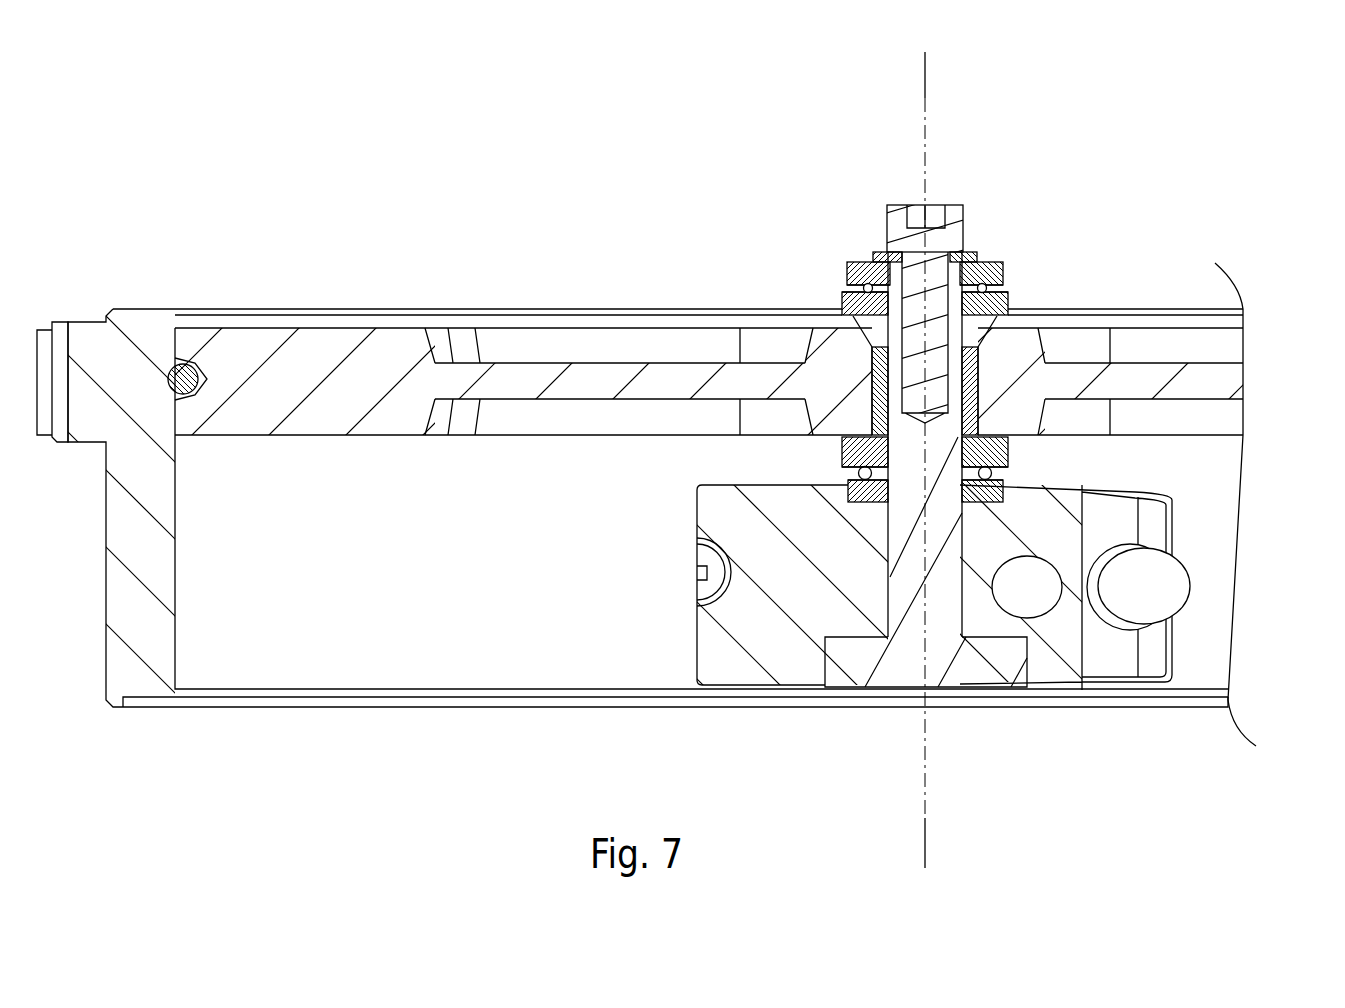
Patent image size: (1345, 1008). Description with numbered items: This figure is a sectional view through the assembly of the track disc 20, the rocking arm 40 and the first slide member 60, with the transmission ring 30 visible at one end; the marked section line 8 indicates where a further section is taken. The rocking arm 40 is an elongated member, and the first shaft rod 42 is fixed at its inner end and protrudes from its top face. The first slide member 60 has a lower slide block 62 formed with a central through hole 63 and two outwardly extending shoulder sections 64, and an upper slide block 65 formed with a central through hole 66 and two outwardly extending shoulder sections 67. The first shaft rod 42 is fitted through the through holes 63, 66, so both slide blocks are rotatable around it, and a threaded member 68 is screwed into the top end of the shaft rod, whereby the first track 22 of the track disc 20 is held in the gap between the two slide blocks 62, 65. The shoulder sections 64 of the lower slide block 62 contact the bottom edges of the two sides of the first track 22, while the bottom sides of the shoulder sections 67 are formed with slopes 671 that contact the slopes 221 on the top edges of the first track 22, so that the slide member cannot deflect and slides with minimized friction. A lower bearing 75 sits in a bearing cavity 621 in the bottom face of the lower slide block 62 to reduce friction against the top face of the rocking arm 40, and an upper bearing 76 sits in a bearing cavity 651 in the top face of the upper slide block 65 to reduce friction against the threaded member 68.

The track disc 20 is at (260, 298).
The first track 22 is at (877, 410).
The slopes 221 is at (835, 345).
The transmission ring 30 is at (66, 308).
The rocking arm 40 is at (667, 628).
The first shaft rod 42 is at (908, 607).
The first slide member 60 is at (1035, 183).
The lower slide block 62 is at (1010, 400).
The bearing cavity 621 is at (845, 457).
The central through hole 63 is at (1012, 425).
The shoulder sections 64 is at (1012, 450).
The upper slide block 65 is at (1010, 360).
The bearing cavity 651 is at (1003, 342).
The central through hole 66 is at (1040, 372).
The shoulder sections 67 is at (860, 302).
The slopes 671 is at (870, 260).
The threaded member 68 is at (892, 203).
The lower bearing 75 is at (863, 495).
The upper bearing 76 is at (985, 265).
The section line 8- 8 is at (930, 77).